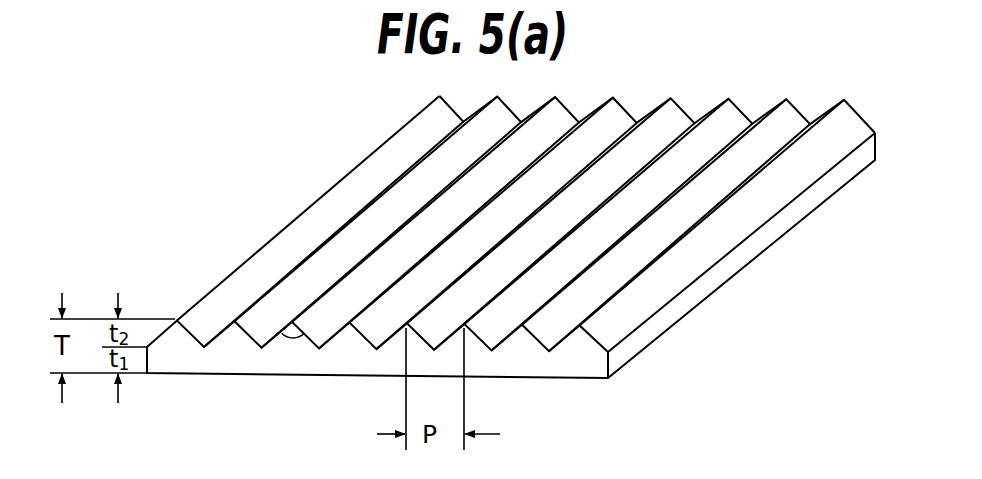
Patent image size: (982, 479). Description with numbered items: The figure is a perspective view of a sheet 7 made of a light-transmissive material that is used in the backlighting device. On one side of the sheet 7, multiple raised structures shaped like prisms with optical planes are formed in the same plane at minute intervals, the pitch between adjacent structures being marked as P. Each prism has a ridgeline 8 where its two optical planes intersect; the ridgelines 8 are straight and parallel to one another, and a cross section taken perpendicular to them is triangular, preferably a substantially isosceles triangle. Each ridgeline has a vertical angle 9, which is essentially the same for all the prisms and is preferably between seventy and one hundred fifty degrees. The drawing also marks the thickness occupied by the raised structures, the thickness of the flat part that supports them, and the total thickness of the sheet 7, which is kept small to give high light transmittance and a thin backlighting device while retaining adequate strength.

The sheet 7 is at (590, 360).
The ridgelines 8 is at (292, 220).
The vertical angle 9 is at (292, 352).